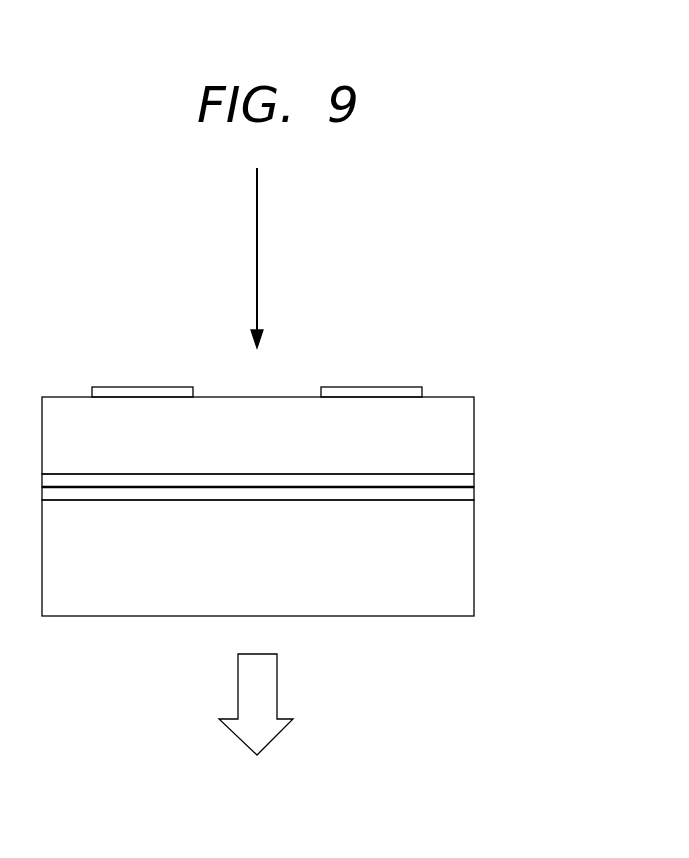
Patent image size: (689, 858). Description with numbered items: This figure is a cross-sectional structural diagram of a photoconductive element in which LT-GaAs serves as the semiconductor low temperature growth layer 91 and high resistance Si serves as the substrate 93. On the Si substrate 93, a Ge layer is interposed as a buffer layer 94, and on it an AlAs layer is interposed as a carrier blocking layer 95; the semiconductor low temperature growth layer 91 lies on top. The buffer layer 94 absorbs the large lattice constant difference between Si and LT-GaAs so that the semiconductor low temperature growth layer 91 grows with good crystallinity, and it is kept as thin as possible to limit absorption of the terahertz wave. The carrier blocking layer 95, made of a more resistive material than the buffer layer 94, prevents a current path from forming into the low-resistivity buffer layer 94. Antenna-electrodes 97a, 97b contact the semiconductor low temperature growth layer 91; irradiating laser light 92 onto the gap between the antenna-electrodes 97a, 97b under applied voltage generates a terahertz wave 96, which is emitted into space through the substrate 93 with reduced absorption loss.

The semiconductor low temperature growth layer 91 is at (463, 432).
The laser light 92 is at (258, 241).
The substrate 93 is at (463, 582).
The buffer layer 94 is at (463, 494).
The carrier blocking layer 95 is at (463, 478).
The terahertz wave 96 is at (278, 690).
The antenna-electrode 97a is at (373, 387).
The antenna-electrode 97b is at (143, 387).